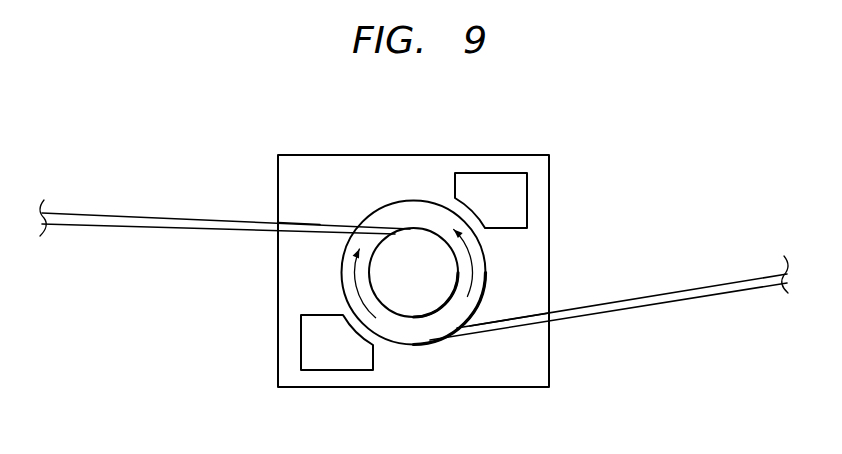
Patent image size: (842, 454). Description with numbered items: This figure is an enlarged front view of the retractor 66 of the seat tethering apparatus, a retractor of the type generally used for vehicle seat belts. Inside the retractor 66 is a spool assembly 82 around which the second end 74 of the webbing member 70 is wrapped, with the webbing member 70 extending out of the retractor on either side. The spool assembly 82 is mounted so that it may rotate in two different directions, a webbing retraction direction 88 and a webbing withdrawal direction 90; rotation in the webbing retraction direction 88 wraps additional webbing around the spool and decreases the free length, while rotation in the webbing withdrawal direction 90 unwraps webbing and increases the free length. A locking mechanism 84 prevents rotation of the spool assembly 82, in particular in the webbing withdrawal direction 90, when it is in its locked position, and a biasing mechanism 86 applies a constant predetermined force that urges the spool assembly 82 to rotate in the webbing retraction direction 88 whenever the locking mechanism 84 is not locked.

The retractor 66 is at (352, 129).
The webbing member 70 is at (115, 213).
The second end 74 is at (323, 222).
The spool assembly 82 is at (417, 207).
The locking mechanism 84 is at (492, 172).
The biasing mechanism 86 is at (335, 370).
The webbing retraction direction 88 is at (352, 277).
The webbing withdrawal direction 90 is at (470, 265).